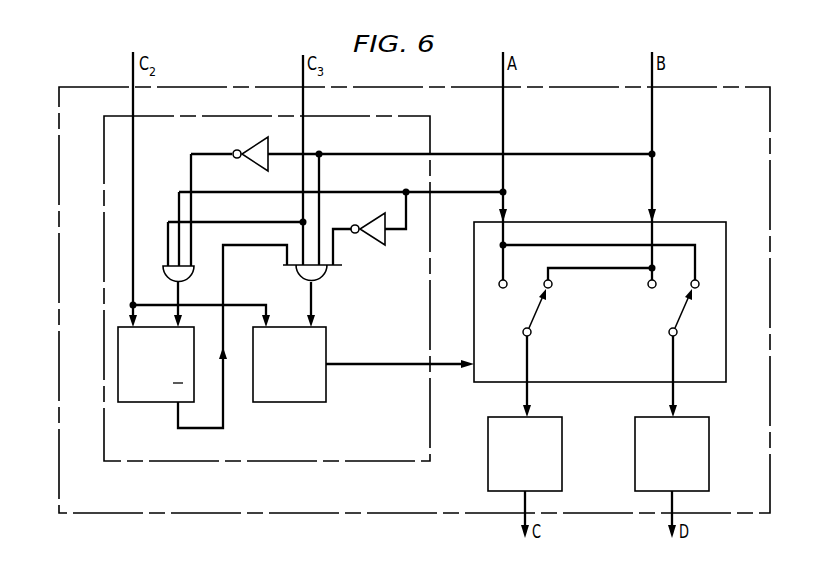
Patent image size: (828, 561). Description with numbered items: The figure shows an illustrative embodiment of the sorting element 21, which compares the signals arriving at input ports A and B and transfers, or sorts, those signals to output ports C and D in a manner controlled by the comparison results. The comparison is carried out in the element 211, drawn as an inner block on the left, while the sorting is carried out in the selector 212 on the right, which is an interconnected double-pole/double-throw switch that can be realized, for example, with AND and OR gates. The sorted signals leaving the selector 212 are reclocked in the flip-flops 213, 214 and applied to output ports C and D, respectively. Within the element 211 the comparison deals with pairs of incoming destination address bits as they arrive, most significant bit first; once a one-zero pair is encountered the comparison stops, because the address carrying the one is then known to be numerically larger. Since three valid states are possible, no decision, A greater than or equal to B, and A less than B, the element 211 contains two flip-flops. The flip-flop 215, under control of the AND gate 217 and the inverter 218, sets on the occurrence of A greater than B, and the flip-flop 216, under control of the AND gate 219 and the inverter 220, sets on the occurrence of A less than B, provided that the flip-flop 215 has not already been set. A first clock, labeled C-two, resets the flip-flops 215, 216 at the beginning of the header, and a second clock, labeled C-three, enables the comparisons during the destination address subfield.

The sorting element 21 is at (97, 87).
The element 211 is at (431, 137).
The selector 212 is at (685, 222).
The flip-flop 213 is at (536, 417).
The flip-flop 214 is at (683, 417).
The flip-flop 215 is at (156, 403).
The flip-flop 216 is at (283, 403).
The AND gate 217 is at (172, 282).
The inverter 218 is at (248, 147).
The AND gate 219 is at (321, 283).
The inverter 220 is at (372, 246).